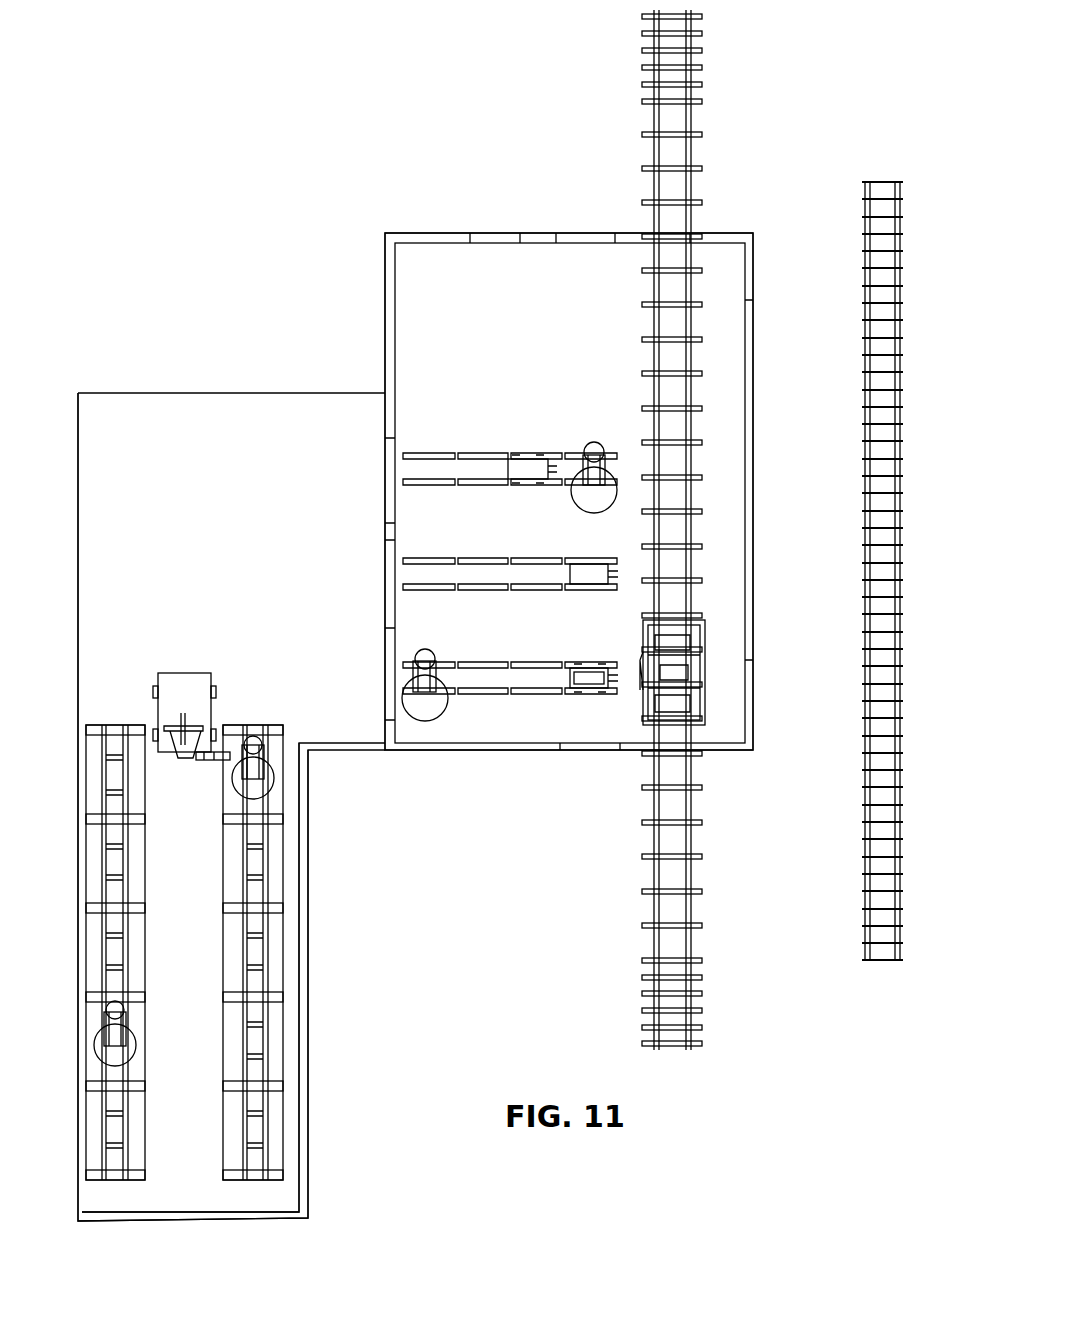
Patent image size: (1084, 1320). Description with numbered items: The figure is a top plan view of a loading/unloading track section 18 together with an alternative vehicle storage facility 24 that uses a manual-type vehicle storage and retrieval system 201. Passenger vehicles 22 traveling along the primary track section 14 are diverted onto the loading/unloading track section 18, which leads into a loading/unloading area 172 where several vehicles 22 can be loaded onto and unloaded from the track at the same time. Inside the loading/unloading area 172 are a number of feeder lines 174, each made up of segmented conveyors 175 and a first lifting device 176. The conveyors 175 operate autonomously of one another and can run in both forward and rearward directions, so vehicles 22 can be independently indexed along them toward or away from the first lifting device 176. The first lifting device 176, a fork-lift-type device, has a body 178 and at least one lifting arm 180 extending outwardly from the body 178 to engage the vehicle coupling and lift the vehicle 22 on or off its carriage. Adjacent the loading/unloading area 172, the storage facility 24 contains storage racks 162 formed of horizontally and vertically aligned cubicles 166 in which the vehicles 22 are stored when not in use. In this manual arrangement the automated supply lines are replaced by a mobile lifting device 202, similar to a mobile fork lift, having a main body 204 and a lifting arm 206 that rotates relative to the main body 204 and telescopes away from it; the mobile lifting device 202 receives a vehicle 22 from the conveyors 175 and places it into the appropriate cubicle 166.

The manual-type vehicle storage and retrieval system 201 is at (300, 335).
The loading/unloading area 172 is at (515, 752).
The storage facility 24 is at (310, 930).
The storage rack 162 is at (285, 983).
The cubicle 166 is at (278, 1052).
The mobile lifting device 202 is at (185, 671).
The main body 204 is at (205, 708).
The lifting arm 206 is at (210, 762).
The feeder line 174 is at (487, 450).
The segmented conveyor 175 is at (475, 695).
The first lifting device 176 is at (567, 696).
The body 178 is at (595, 678).
The passenger vehicle 22 is at (400, 718).
The lifting arm 180 is at (620, 663).
The loading/unloading track section 18 is at (705, 1027).
The primary track section 14 is at (865, 928).